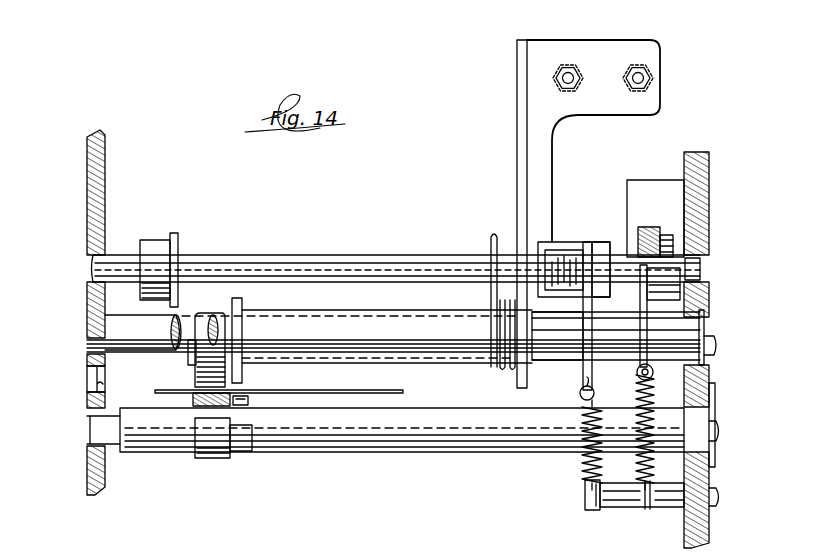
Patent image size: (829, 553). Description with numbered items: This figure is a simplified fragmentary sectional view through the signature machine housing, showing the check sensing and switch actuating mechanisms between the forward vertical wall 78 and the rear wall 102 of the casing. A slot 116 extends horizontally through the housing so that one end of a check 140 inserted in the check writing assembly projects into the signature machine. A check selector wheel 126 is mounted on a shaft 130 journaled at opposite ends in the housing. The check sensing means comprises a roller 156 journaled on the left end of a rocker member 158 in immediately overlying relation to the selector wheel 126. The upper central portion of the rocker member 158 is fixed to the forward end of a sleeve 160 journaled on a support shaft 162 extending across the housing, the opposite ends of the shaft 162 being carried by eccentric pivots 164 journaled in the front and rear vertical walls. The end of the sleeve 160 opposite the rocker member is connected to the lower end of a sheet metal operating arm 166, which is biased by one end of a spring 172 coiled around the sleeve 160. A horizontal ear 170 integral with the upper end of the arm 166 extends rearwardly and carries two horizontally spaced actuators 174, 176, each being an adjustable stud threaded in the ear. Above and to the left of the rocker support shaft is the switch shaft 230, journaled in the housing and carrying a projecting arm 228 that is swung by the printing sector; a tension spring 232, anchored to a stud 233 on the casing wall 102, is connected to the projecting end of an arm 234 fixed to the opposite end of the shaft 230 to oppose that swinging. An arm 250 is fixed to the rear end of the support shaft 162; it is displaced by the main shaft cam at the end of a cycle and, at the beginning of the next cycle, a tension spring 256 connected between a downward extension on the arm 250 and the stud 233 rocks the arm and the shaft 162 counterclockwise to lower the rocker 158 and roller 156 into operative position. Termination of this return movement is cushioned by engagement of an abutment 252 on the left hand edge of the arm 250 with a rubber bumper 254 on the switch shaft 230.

The forward vertical wall 78 is at (98, 217).
The rear wall 102 is at (702, 221).
The slot 116 is at (94, 386).
The check selector wheel 126 is at (212, 454).
The shaft 130 is at (352, 432).
The check 140 is at (400, 385).
The roller 156 is at (200, 376).
The rocker member 158 is at (243, 305).
The sleeve 160 is at (315, 326).
The support shaft 162 is at (130, 326).
The eccentric pivots 164 is at (90, 341).
The operating arm 166 is at (515, 164).
The horizontal ear 170 is at (589, 67).
The spring 172 is at (488, 241).
The actuator 174 is at (574, 83).
The actuator 176 is at (646, 81).
The projecting arm 228 is at (180, 291).
The shaft 230 is at (290, 250).
The tension spring 232 is at (652, 409).
The stud 233 is at (622, 501).
The arm 234 is at (648, 346).
The arm 250 is at (592, 333).
The abutment 252 is at (562, 258).
The rubber bumper 254 is at (618, 225).
The tension spring 256 is at (582, 464).